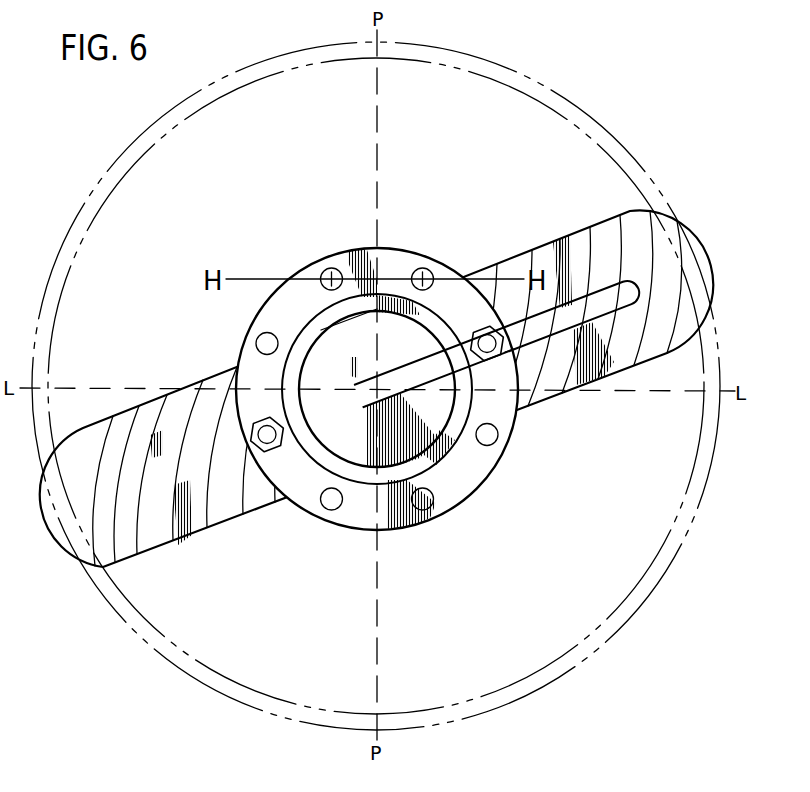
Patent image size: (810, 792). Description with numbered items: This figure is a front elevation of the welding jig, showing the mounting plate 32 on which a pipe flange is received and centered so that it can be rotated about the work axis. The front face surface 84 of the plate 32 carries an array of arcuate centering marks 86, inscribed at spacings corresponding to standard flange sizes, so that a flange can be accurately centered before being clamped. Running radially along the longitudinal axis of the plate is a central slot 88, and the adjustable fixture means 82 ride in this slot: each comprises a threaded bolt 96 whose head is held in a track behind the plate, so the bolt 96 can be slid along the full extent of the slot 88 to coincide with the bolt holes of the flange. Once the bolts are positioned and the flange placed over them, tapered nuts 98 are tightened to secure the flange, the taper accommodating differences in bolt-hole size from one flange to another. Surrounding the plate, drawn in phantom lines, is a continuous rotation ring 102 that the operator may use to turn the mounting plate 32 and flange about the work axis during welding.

The mounting plate 32 is at (680, 210).
The adjustable fixture means 82 is at (253, 412).
The face surface 84 is at (550, 255).
The centering marks 86 is at (224, 526).
The central slot 88 is at (607, 290).
The threaded bolt 96 is at (487, 352).
The tapered nut 98 is at (514, 354).
The continuous rotation ring 102 is at (604, 120).